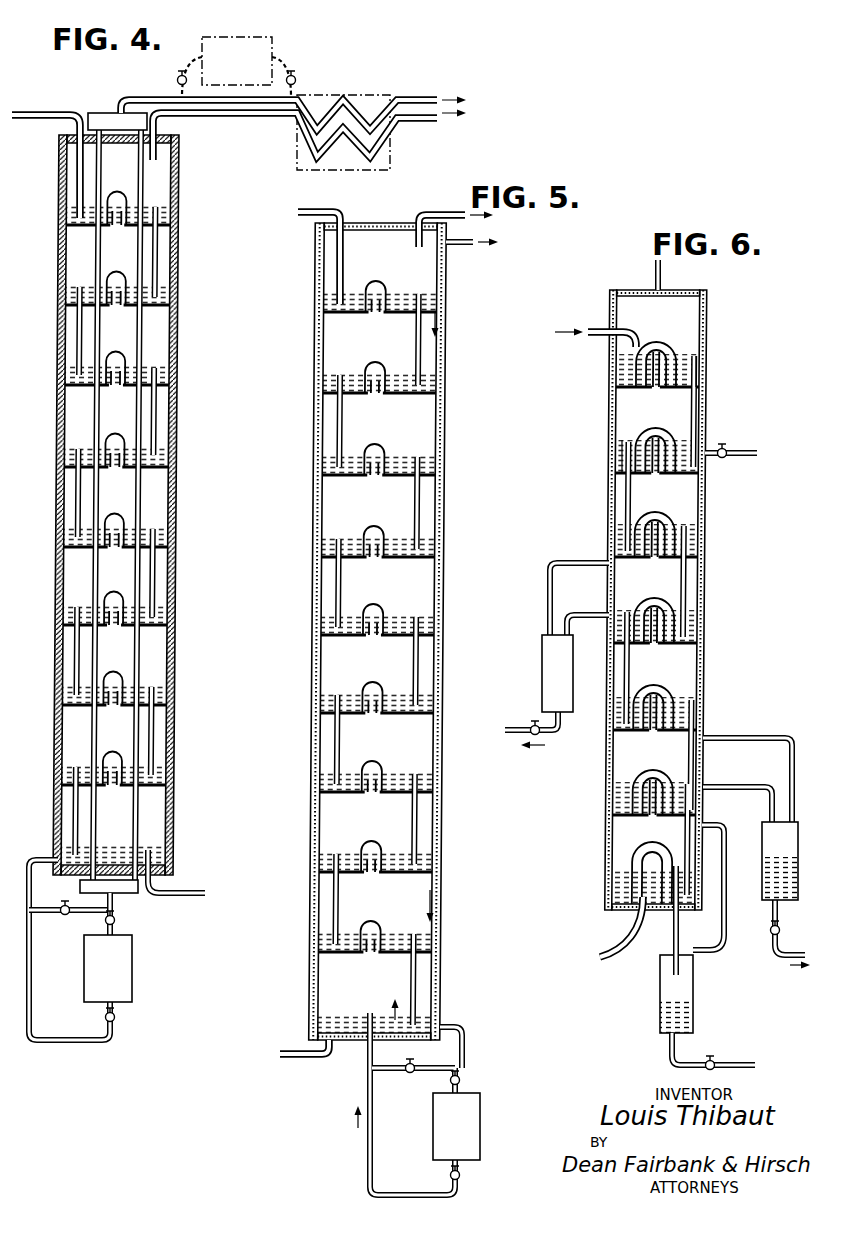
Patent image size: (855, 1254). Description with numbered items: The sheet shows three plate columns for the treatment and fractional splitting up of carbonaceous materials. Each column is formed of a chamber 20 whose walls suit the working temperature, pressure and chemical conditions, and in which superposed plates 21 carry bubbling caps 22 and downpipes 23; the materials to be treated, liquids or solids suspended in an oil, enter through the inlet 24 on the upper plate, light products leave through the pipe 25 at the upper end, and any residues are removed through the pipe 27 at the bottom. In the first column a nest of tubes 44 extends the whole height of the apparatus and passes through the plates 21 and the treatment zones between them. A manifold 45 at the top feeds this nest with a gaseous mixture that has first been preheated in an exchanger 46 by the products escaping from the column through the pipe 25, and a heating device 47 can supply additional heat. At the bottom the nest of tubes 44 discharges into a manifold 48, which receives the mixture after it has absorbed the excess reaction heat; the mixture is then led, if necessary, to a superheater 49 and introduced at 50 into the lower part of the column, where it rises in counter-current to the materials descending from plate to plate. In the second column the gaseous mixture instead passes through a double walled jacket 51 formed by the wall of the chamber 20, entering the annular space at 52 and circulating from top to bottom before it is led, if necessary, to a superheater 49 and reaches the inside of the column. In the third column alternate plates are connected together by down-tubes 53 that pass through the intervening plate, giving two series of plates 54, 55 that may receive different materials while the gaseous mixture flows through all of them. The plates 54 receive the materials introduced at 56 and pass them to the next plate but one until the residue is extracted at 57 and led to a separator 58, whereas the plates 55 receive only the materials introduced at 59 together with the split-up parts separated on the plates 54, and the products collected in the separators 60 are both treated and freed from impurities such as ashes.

In FIG. 4, the chamber 20 is at (178, 253).
In FIG. 5, the chamber 20 is at (445, 462).
In FIG. 6, the chamber 20 is at (707, 395).
In FIG. 4, the plates 21 is at (172, 322).
In FIG. 5, the plates 21 is at (423, 480).
In FIG. 4, the bubbling caps 22 is at (118, 357).
In FIG. 5, the bubbling caps 22 is at (381, 607).
In FIG. 4, the downpipes 23 is at (64, 338).
In FIG. 5, the downpipes 23 is at (413, 520).
In FIG. 4, the inlet 24 is at (40, 110).
In FIG. 5, the inlet 24 is at (302, 214).
In FIG. 4, the pipe 25 is at (167, 118).
In FIG. 5, the pipe 25 is at (447, 212).
In FIG. 6, the pipe 25 is at (655, 275).
In FIG. 4, the pipe 27 is at (196, 890).
In FIG. 5, the pipe 27 is at (312, 1060).
In FIG. 6, the pipe 27 is at (615, 965).
In FIG. 4, the nest of tubes 44 is at (144, 185).
In FIG. 4, the manifold 45 is at (137, 116).
In FIG. 4, the exchanger 46 is at (293, 111).
In FIG. 4, the heating device 47 is at (272, 42).
In FIG. 4, the manifold 48 is at (138, 893).
In FIG. 4, the superheater 49 is at (132, 975).
In FIG. 5, the superheater 49 is at (433, 1123).
In FIG. 4, the introduction point 50 is at (52, 856).
In FIG. 5, the double walled jacket 51 is at (437, 357).
In FIG. 5, the jacket inlet 52 is at (470, 248).
In FIG. 6, the down-tubes 53 is at (690, 425).
In FIG. 6, the plates 54 is at (636, 388).
In FIG. 6, the plates 55 is at (682, 478).
In FIG. 6, the inlet 56 is at (597, 328).
In FIG. 6, the residue outlet 57 is at (668, 940).
In FIG. 6, the separator 58 is at (693, 1012).
In FIG. 6, the inlet 59 is at (747, 458).
In FIG. 6, the separators 60 is at (545, 667).